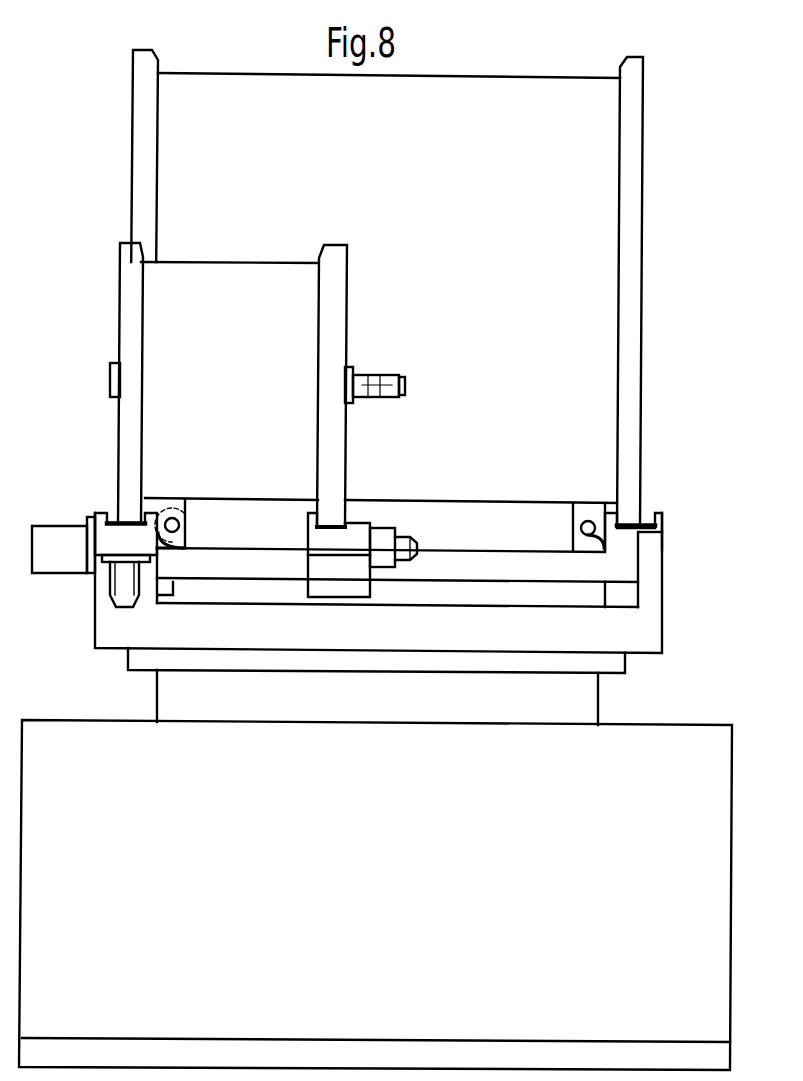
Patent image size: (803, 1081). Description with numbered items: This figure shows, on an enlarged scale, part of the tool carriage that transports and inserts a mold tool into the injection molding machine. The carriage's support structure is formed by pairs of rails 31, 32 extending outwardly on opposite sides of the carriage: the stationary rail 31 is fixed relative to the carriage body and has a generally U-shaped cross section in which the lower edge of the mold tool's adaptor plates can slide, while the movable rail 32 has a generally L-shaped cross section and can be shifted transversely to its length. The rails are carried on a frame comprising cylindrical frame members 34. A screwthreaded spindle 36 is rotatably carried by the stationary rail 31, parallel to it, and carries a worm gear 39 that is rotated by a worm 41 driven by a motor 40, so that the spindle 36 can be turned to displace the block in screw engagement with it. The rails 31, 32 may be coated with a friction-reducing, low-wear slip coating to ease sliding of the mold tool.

The stationary rail 31 is at (100, 512).
The movable rail 32 is at (308, 530).
The cylindrical frame member 34 is at (617, 575).
The screwthreaded spindle 36 is at (179, 525).
The worm gear 39 is at (184, 512).
The motor 40 is at (42, 567).
The worm 41 is at (172, 553).